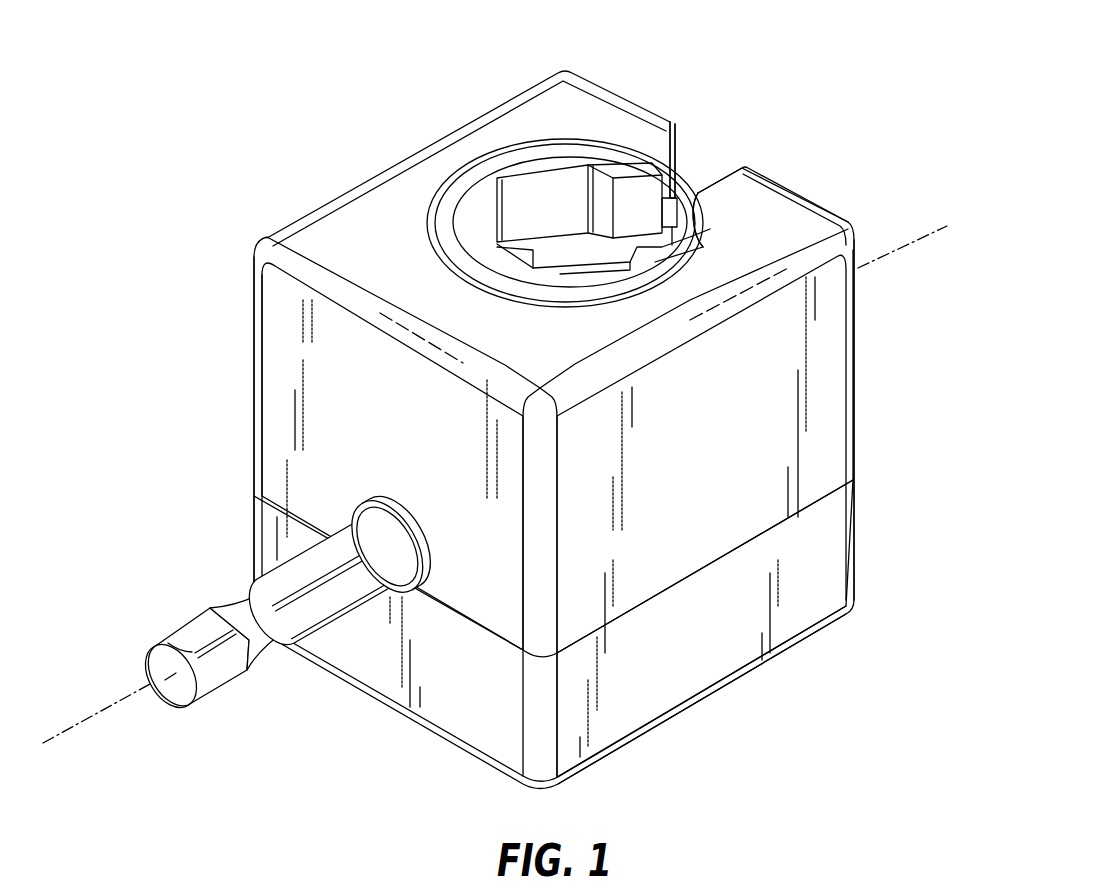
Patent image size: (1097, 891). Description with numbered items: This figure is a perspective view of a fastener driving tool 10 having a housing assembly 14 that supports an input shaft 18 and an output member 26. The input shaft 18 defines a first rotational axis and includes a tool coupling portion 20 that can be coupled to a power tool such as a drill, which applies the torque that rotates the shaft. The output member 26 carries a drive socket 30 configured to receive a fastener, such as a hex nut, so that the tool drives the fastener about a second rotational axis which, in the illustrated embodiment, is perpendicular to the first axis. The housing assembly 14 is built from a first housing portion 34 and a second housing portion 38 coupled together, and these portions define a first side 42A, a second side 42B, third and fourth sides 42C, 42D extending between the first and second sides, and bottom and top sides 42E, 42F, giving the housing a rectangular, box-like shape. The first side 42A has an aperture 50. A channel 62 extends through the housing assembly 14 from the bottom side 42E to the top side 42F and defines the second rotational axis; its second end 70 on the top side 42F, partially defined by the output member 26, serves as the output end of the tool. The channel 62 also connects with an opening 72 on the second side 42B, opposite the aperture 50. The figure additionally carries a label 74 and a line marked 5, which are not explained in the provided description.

The fastener driving tool 10 is at (251, 150).
The housing assembly 14 is at (543, 414).
The input shaft 18 is at (286, 630).
The tool coupling portion 20 is at (244, 684).
The output member 26 is at (538, 166).
The drive socket 30 is at (473, 203).
The first housing portion 34 is at (823, 543).
The second housing portion 38 is at (817, 418).
The first side 42A is at (275, 352).
The second side 42B is at (853, 332).
The third side 42C is at (747, 517).
The fourth side 42D is at (254, 400).
The bottom side 42E is at (697, 703).
The top side 42F is at (783, 223).
The aperture 50 is at (390, 592).
The channel 62 is at (676, 122).
The second end 70 is at (586, 152).
The opening 72 is at (717, 182).
The rounded edge 74 is at (322, 197).
The axis 5 is at (122, 704).